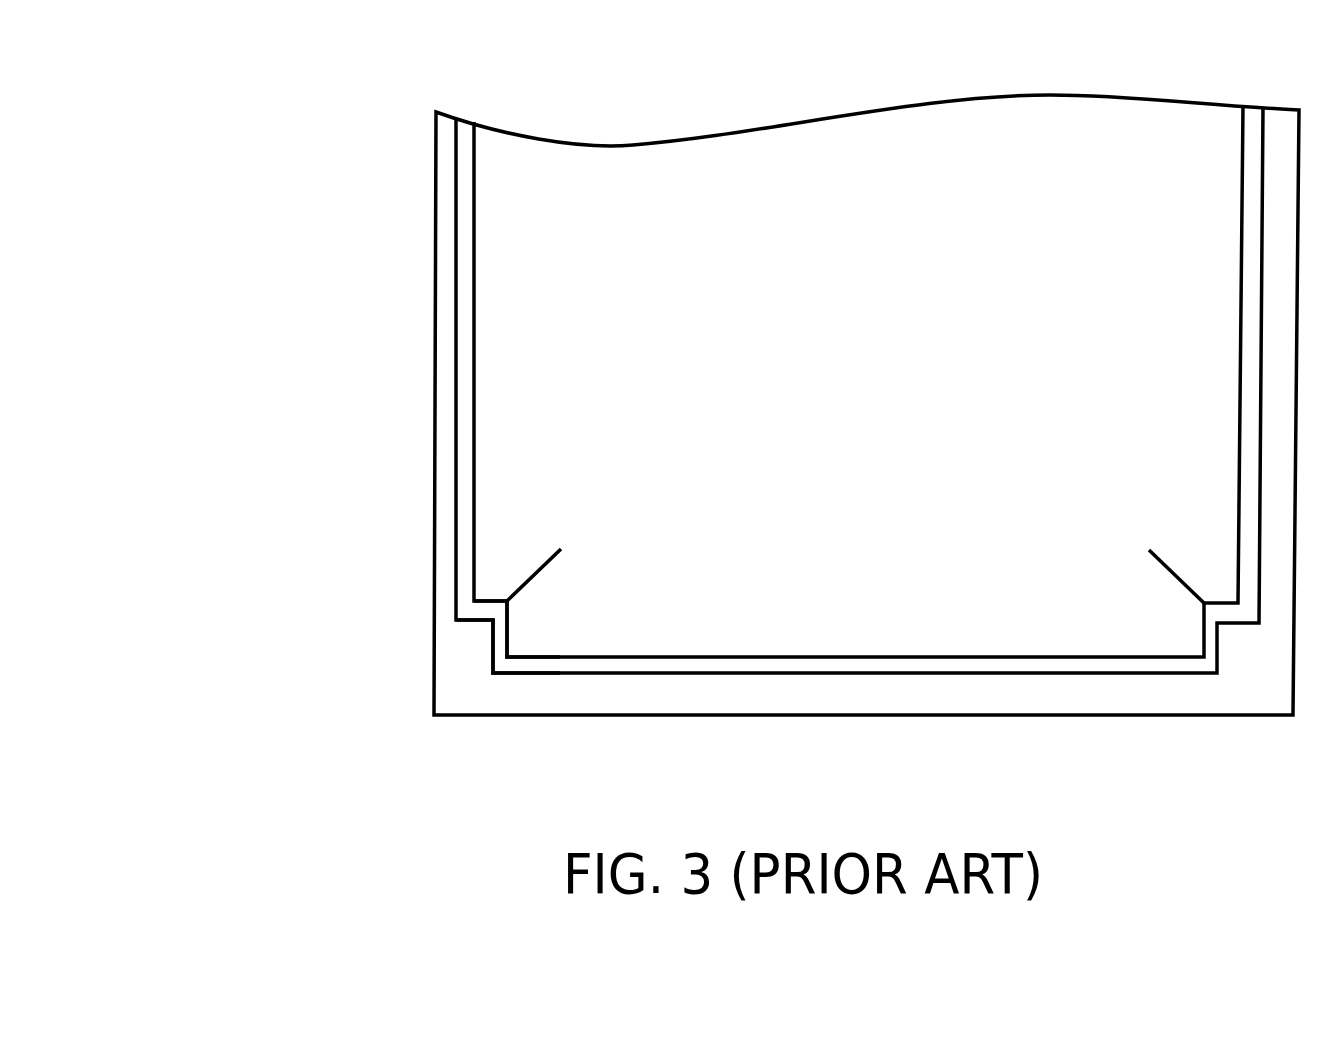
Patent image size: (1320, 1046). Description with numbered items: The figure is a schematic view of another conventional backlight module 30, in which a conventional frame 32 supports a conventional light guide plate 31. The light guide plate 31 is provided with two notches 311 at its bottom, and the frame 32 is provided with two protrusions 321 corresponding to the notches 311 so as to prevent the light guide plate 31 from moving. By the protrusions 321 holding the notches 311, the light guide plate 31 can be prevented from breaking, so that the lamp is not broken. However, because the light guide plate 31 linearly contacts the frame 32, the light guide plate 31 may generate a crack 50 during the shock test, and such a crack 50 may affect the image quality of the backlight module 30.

The backlight module 30 is at (302, 71).
The light guide plate 31 is at (522, 352).
The notches 311 is at (490, 617).
The frame 32 is at (443, 685).
The protrusions 321 is at (473, 646).
The crack 50 is at (545, 565).